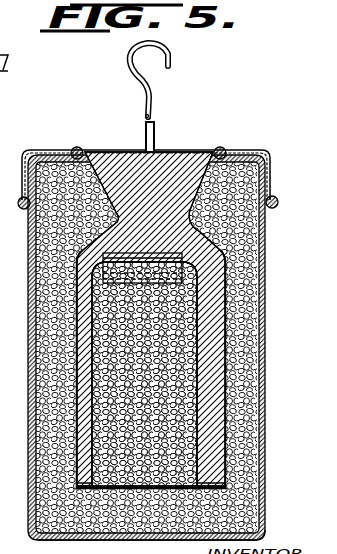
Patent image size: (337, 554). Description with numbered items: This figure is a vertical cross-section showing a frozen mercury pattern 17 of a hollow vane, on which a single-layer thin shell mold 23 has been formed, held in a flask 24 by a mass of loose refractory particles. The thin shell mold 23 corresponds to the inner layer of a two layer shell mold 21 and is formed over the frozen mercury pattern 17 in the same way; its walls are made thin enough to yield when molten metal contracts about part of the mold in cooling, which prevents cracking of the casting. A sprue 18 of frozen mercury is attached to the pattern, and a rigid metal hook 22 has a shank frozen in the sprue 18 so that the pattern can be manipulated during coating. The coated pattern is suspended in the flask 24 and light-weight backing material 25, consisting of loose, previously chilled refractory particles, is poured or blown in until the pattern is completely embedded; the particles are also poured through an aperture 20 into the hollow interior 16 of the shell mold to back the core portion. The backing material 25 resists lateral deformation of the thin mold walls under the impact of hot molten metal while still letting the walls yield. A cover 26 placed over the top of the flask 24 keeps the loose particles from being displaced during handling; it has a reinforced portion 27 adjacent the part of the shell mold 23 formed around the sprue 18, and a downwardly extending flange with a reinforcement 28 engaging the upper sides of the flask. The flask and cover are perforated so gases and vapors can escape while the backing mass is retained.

The hollow interior 16 is at (150, 458).
The frozen mercury pattern 17 is at (208, 313).
The sprue 18 is at (180, 165).
The aperture 20 is at (103, 256).
The two layer shell mold 21 is at (66, 540).
The rigid metal hook 22 is at (127, 66).
The shell mold 23 is at (76, 442).
The flask 24 is at (266, 260).
The backing material 25 is at (248, 363).
The cover 26 is at (258, 150).
The reinforced portion 27 is at (227, 148).
The reinforcement 28 is at (279, 201).